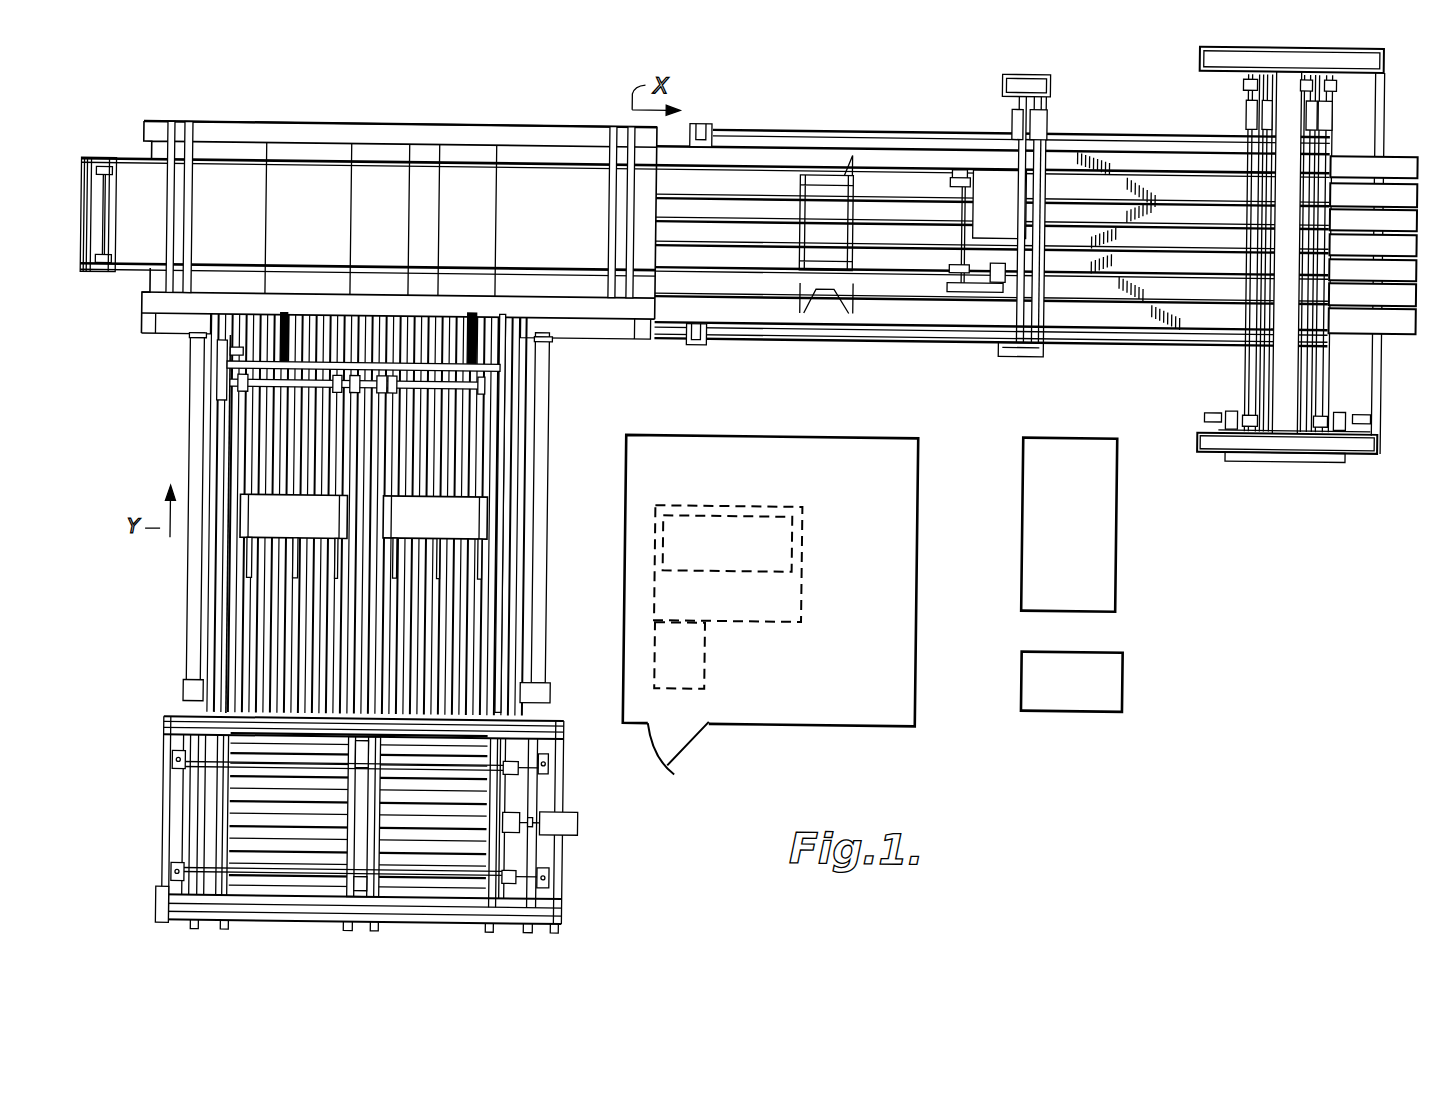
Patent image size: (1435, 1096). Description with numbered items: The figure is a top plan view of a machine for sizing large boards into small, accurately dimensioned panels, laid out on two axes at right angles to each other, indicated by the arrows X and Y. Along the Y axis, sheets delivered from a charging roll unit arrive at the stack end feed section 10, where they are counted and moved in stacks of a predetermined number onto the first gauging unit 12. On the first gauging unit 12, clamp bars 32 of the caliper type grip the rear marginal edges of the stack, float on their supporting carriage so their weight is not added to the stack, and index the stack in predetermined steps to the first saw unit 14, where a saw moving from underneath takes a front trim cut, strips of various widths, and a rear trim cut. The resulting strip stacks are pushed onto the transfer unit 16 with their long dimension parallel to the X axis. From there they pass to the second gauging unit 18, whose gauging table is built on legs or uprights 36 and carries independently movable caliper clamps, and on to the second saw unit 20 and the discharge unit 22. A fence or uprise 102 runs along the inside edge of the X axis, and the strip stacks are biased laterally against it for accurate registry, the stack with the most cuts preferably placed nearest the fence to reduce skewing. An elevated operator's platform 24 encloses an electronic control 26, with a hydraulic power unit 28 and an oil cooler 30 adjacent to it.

The stack end feed section 10 is at (572, 848).
The first gauging unit 12 is at (263, 526).
The first saw unit 14 is at (180, 310).
The transfer unit 16 is at (447, 122).
The second gauging unit 18 is at (932, 139).
The second saw unit 20 is at (1284, 343).
The discharge unit 22 is at (1390, 322).
The operator's platform 24 is at (920, 573).
The electronic control 26 is at (810, 560).
The hydraulic power unit 28 is at (1110, 520).
The oil cooler 30 is at (1122, 661).
The clamp bars 32 is at (487, 559).
The legs or uprights 36 is at (705, 338).
The fence or uprise 102 is at (965, 328).